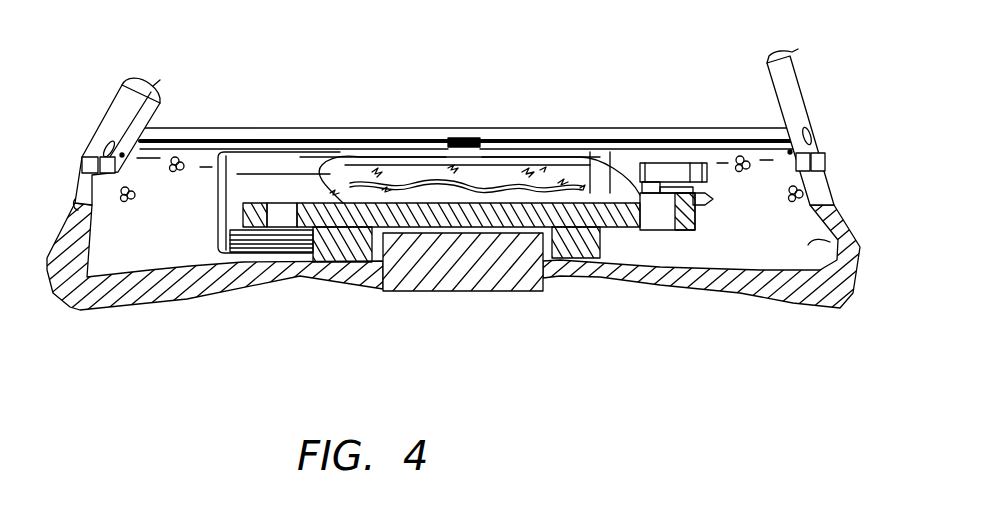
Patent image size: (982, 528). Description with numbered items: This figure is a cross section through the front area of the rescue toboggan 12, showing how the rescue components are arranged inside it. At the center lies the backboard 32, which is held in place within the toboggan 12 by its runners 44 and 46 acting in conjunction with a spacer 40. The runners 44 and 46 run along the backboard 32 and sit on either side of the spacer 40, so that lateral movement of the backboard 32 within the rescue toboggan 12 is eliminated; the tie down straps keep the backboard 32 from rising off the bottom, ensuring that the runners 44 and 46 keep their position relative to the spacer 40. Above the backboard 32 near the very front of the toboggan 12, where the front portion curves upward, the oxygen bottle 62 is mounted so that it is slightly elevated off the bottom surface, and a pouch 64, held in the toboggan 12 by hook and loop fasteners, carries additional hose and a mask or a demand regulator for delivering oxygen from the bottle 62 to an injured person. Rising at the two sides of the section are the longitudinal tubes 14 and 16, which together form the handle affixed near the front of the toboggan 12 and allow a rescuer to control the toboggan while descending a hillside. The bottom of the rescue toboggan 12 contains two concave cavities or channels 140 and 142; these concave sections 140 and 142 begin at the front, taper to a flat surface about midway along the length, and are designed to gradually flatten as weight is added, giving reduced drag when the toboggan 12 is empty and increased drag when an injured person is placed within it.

The rescue toboggan 12 is at (491, 281).
The longitudinal tube 14 is at (120, 112).
The longitudinal tube 16 is at (766, 65).
The backboard 32 is at (439, 221).
The spacer 40 is at (448, 255).
The runner 44 is at (570, 245).
The runner 46 is at (343, 228).
The oxygen bottle 62 is at (277, 165).
The pouch 64 is at (520, 167).
The concave cavity 140 is at (242, 292).
The concave cavity 142 is at (722, 296).